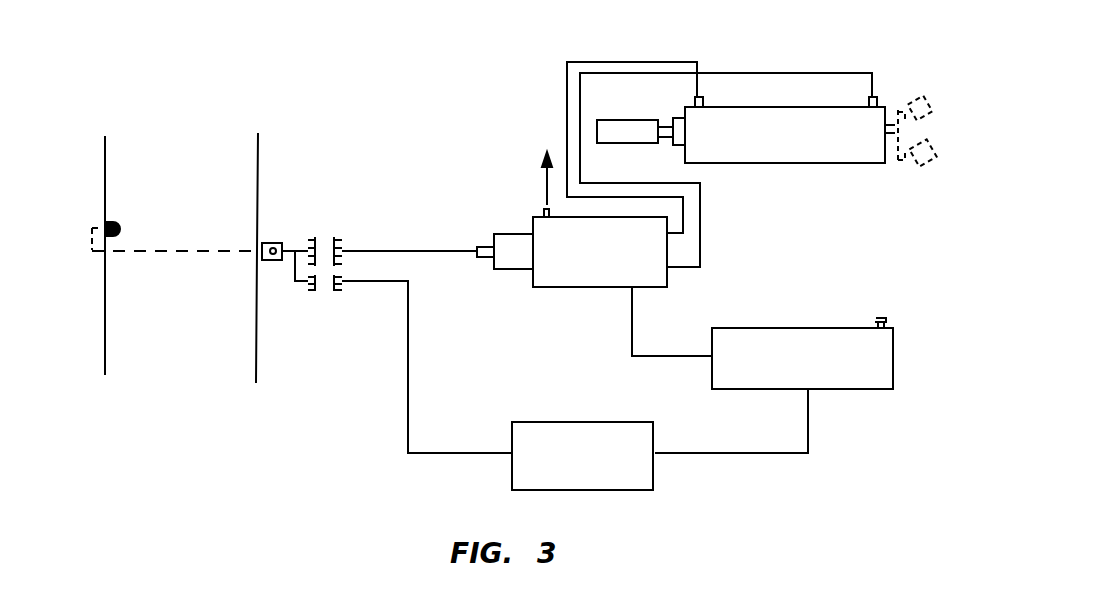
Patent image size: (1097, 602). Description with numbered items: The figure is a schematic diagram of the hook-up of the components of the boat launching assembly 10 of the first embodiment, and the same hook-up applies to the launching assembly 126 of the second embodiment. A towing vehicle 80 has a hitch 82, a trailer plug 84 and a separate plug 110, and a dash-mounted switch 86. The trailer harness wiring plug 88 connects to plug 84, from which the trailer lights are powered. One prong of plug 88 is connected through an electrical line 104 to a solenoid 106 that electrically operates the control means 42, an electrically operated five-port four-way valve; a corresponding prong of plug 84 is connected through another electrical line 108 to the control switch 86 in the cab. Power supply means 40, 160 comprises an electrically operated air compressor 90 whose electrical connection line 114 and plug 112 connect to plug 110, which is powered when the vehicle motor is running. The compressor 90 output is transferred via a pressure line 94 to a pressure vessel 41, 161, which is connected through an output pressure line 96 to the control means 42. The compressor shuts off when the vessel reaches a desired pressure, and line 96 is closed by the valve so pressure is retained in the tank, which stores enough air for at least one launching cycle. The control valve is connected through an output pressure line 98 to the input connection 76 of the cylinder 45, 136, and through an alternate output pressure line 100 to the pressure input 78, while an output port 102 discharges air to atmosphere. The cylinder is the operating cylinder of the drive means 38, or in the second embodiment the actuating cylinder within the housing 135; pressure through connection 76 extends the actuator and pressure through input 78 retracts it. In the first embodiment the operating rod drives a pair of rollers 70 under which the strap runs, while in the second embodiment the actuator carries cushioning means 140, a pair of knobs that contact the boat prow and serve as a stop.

The launching assembly 10 is at (687, 116).
The launching assembly 126 is at (541, 103).
The drive means 38 is at (893, 98).
The actuating cylinder and housing 135 is at (888, 106).
The power supply means 40 is at (723, 415).
The power supply means 160 is at (655, 440).
The pressure vessel 41 is at (802, 342).
The pressure vessel 161 is at (808, 328).
The control means 42 is at (533, 217).
The operating cylinder 45 is at (785, 123).
The actuating cylinder 136 is at (824, 107).
The pair of rollers 70 is at (630, 128).
The input connection 76 is at (869, 101).
The pressure input 78 is at (703, 100).
The towing vehicle 80 is at (260, 160).
The hitch 82 is at (275, 260).
The trailer plug 84 is at (315, 237).
The dash-mounted switch 86 is at (114, 222).
The trailer harness wiring plug 88 is at (334, 237).
The air compressor 90 is at (608, 422).
The pressure line 94 is at (725, 453).
The output pressure line 96 is at (632, 332).
The output pressure line 98 is at (700, 246).
The alternate output pressure line 100 is at (567, 120).
The output port 102 is at (544, 210).
The electrical line 104 is at (434, 251).
The solenoid 106 is at (494, 237).
The electrical line 108 is at (216, 251).
The plug 110 is at (315, 291).
The plug 112 is at (334, 291).
The electrical connection line 114 is at (408, 405).
The cushioning means 140 is at (918, 176).